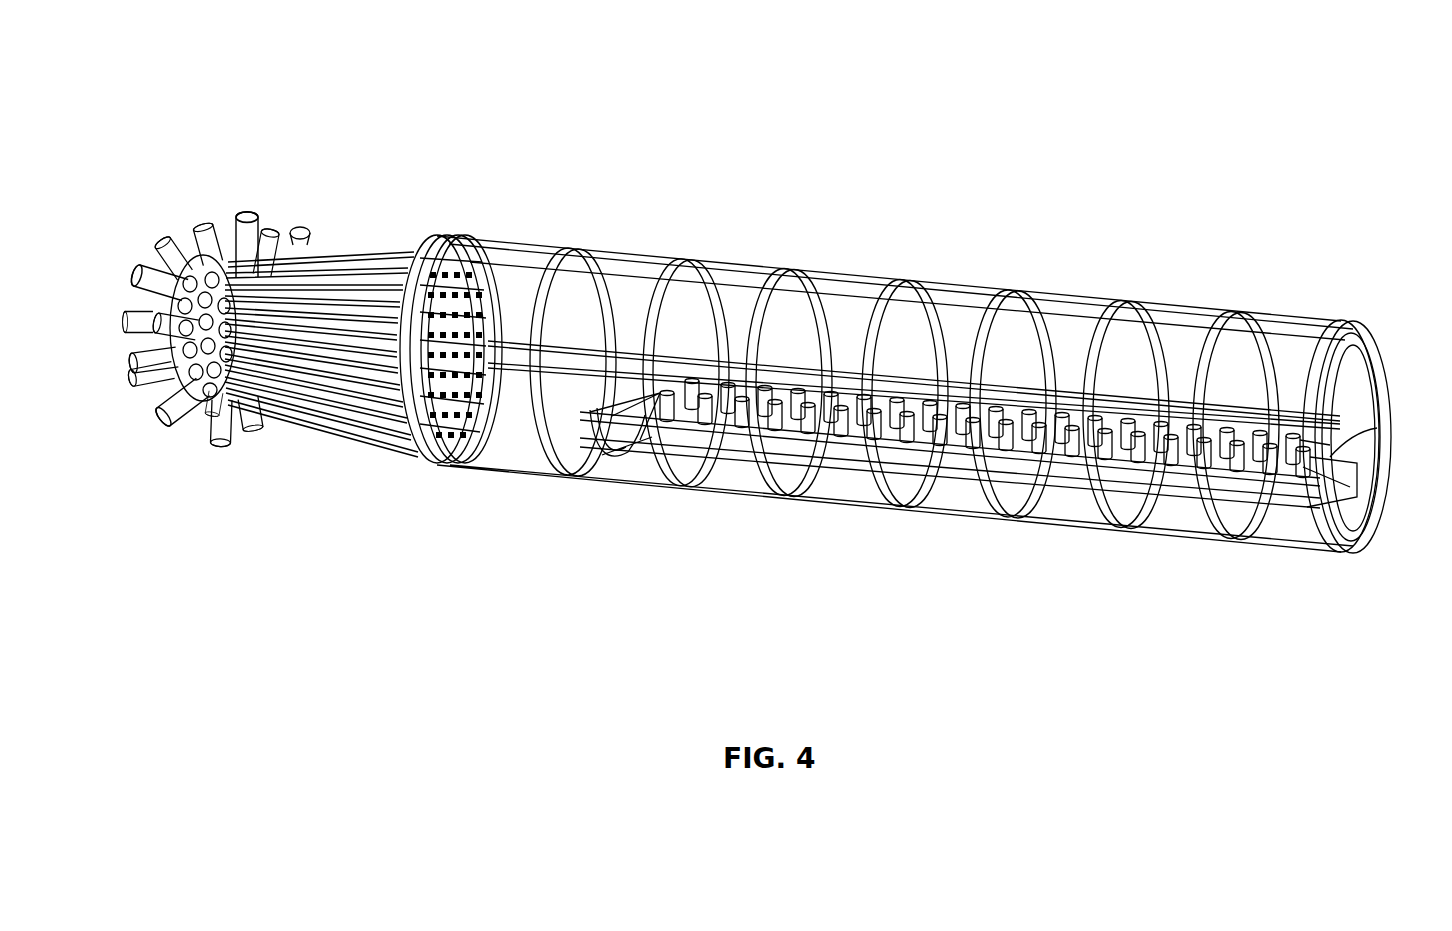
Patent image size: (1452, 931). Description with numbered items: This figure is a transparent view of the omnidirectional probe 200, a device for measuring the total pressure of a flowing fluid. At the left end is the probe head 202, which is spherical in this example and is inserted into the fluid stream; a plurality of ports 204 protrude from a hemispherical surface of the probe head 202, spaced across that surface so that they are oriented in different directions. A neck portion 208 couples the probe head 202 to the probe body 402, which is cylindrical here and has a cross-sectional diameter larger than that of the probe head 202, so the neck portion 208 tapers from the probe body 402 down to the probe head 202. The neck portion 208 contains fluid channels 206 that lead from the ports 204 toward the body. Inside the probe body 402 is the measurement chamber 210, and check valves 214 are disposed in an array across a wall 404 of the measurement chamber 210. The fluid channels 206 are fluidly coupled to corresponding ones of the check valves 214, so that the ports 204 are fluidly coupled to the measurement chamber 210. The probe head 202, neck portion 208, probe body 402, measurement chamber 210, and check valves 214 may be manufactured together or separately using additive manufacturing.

The omnidirectional probe 200 is at (288, 90).
The probe head 202 is at (178, 186).
The ports 204 is at (132, 273).
The fluid channels 206 is at (373, 423).
The neck portion 208 is at (405, 256).
The measurement chamber 210 is at (1057, 487).
The check valves 214 is at (1057, 407).
The probe body 402 is at (837, 273).
The wall 404 is at (1378, 412).